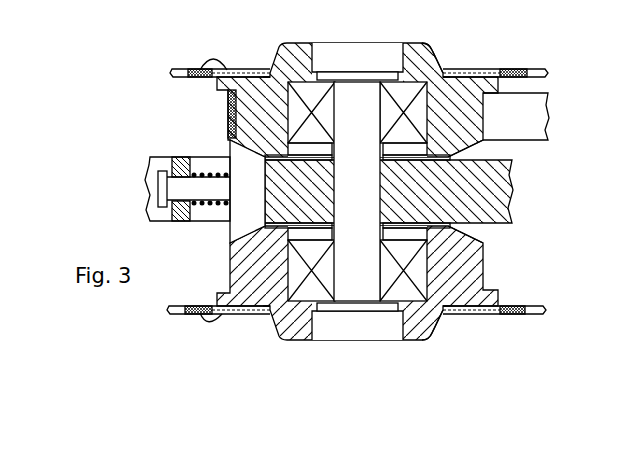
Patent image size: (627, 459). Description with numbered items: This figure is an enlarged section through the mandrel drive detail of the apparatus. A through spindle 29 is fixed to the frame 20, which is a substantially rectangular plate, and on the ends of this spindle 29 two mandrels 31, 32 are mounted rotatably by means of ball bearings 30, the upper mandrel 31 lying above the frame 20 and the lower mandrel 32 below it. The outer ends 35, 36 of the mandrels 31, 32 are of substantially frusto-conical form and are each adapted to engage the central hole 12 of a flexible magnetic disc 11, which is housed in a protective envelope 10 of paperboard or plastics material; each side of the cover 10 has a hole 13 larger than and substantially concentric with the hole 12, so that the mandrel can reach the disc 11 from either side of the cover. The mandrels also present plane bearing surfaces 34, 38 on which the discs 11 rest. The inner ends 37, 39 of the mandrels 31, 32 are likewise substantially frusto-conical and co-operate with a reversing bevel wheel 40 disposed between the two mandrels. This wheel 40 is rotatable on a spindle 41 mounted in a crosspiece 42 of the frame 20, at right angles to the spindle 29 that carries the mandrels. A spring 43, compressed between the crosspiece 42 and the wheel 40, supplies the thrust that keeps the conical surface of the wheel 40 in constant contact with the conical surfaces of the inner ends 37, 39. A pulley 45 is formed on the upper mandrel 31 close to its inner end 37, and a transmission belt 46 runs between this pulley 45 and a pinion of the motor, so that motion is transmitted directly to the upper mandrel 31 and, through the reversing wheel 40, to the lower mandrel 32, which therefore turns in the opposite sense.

The envelope 10 is at (537, 76).
The magnetic disc 11 is at (480, 72).
The central hole 12 is at (440, 73).
The hole 13 is at (498, 73).
The frame 20 is at (507, 193).
The through spindle 29 is at (363, 294).
The ball bearings 30 is at (320, 88).
The upper mandrel 31 is at (268, 84).
The lower mandrel 32 is at (450, 272).
The plane bearing surface 34 is at (207, 76).
The outer end 35 is at (425, 58).
The outer end 36 is at (284, 323).
The inner end 37 is at (468, 145).
The plane bearing surface 38 is at (205, 305).
The inner end 39 is at (468, 239).
The reversing bevel wheel 40 is at (237, 222).
The spindle 41 is at (186, 193).
The crosspiece 42 is at (180, 157).
The spring 43 is at (207, 171).
The pulley 45 is at (240, 118).
The transmission belt 46 is at (535, 118).